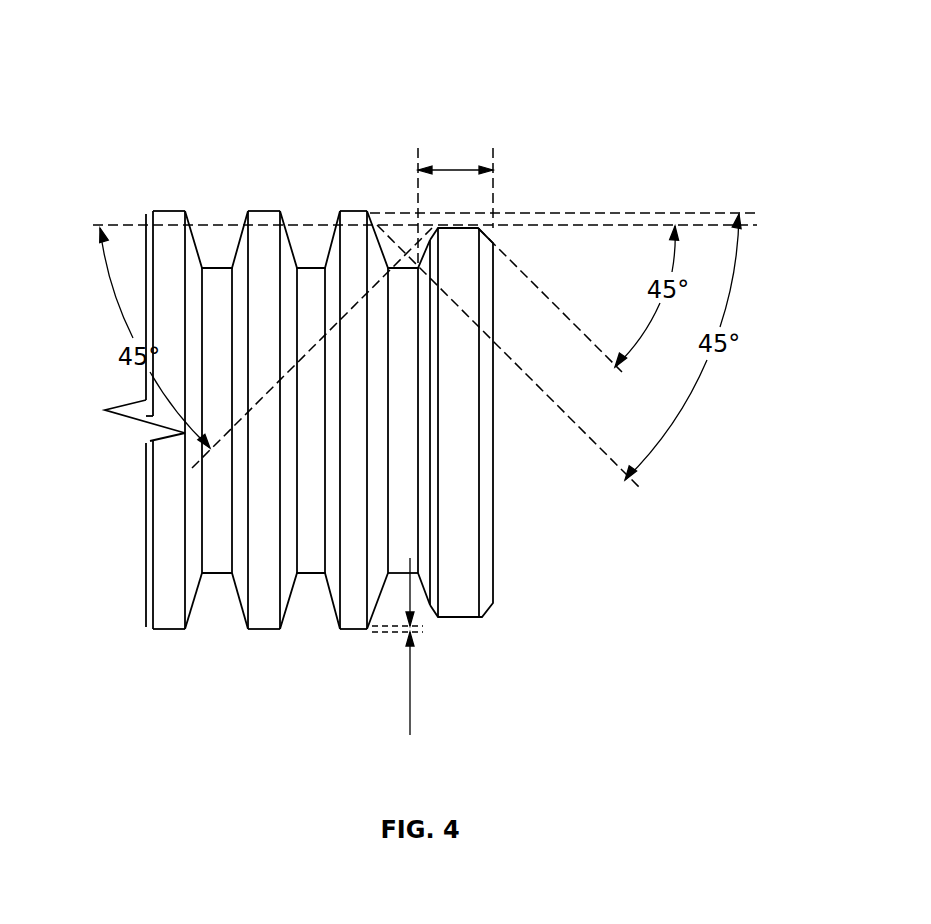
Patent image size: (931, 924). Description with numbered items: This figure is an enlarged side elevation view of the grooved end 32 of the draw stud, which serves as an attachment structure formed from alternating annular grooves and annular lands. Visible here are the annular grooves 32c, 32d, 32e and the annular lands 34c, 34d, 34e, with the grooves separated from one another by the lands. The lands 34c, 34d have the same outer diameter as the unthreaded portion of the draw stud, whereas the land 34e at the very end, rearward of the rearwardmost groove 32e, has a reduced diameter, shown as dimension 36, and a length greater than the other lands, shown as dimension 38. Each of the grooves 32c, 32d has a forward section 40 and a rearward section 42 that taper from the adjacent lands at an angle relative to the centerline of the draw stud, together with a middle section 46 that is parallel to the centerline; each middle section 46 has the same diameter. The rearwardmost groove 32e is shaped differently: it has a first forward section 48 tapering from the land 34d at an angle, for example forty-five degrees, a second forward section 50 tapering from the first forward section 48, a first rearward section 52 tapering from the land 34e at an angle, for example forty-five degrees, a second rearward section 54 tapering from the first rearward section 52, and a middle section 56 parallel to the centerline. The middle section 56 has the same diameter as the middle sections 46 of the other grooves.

The grooved end 32 is at (363, 128).
The annular groove 32c is at (218, 235).
The annular groove 32d is at (317, 235).
The annular groove 32e is at (405, 235).
The annular land 34c is at (275, 213).
The annular land 34d is at (362, 212).
The annular land 34e is at (470, 228).
The dimension 36 is at (408, 693).
The dimension 38 is at (455, 170).
The forward section 40 is at (195, 605).
The rearward section 42 is at (240, 605).
The middle section 46 is at (222, 575).
The first forward section 48 is at (373, 628).
The second forward section 50 is at (383, 593).
The first rearward section 52 is at (430, 610).
The second rearward section 54 is at (423, 573).
The middle section 56 is at (397, 573).